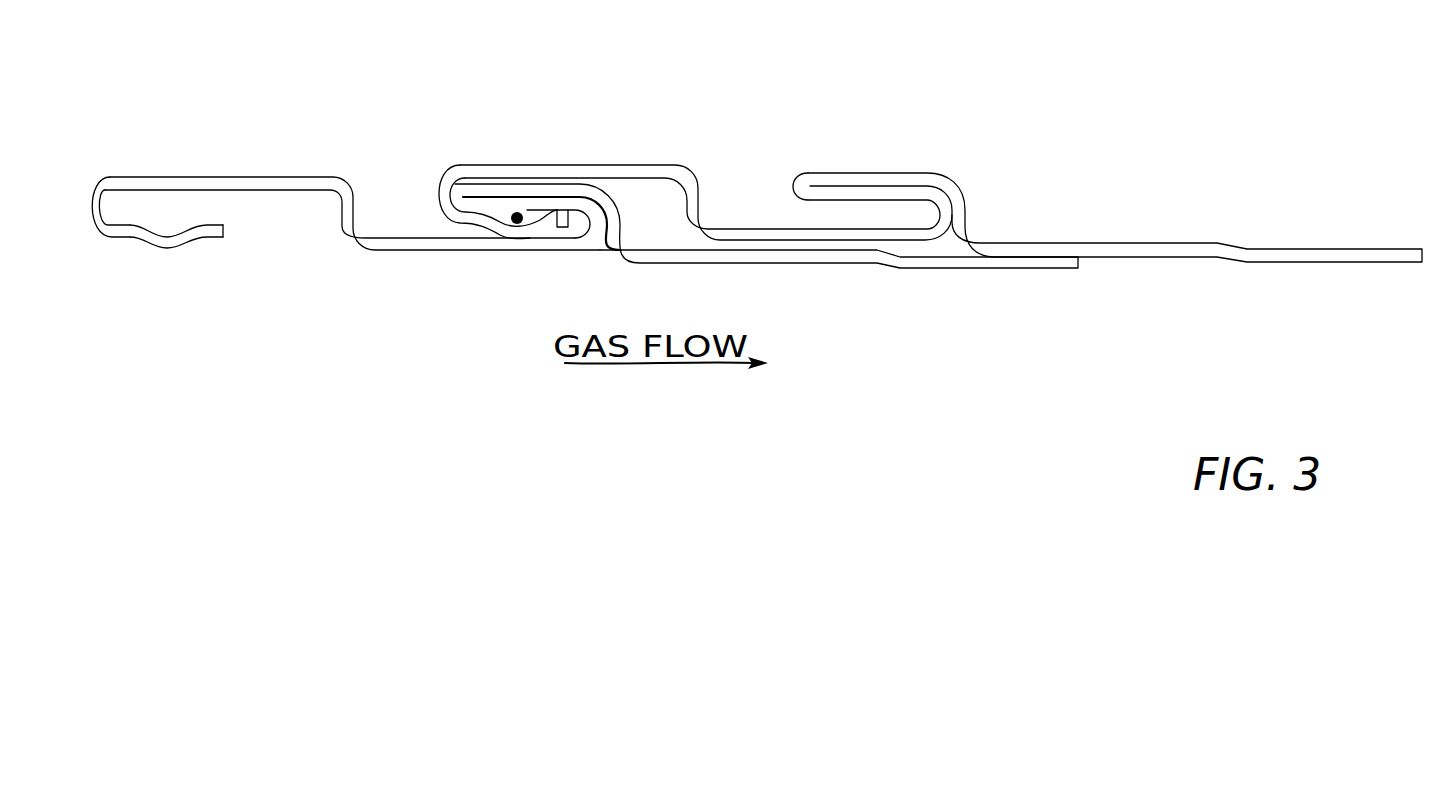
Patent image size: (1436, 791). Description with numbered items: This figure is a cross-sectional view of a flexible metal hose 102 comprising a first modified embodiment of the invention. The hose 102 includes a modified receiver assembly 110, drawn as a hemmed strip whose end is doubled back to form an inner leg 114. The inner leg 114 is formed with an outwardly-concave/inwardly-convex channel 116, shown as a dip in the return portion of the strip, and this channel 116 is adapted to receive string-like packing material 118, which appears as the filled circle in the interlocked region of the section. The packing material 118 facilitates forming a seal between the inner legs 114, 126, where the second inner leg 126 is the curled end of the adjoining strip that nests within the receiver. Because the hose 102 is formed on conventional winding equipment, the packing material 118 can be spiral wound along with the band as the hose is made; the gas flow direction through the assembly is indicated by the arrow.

The hose 102 is at (948, 128).
The modified receiver assembly 110 is at (107, 181).
The inner leg 114 is at (223, 227).
The outwardly-concave/inwardly-convex channel 116 is at (167, 238).
The packing material 118 is at (517, 215).
The inner leg 126 is at (560, 212).